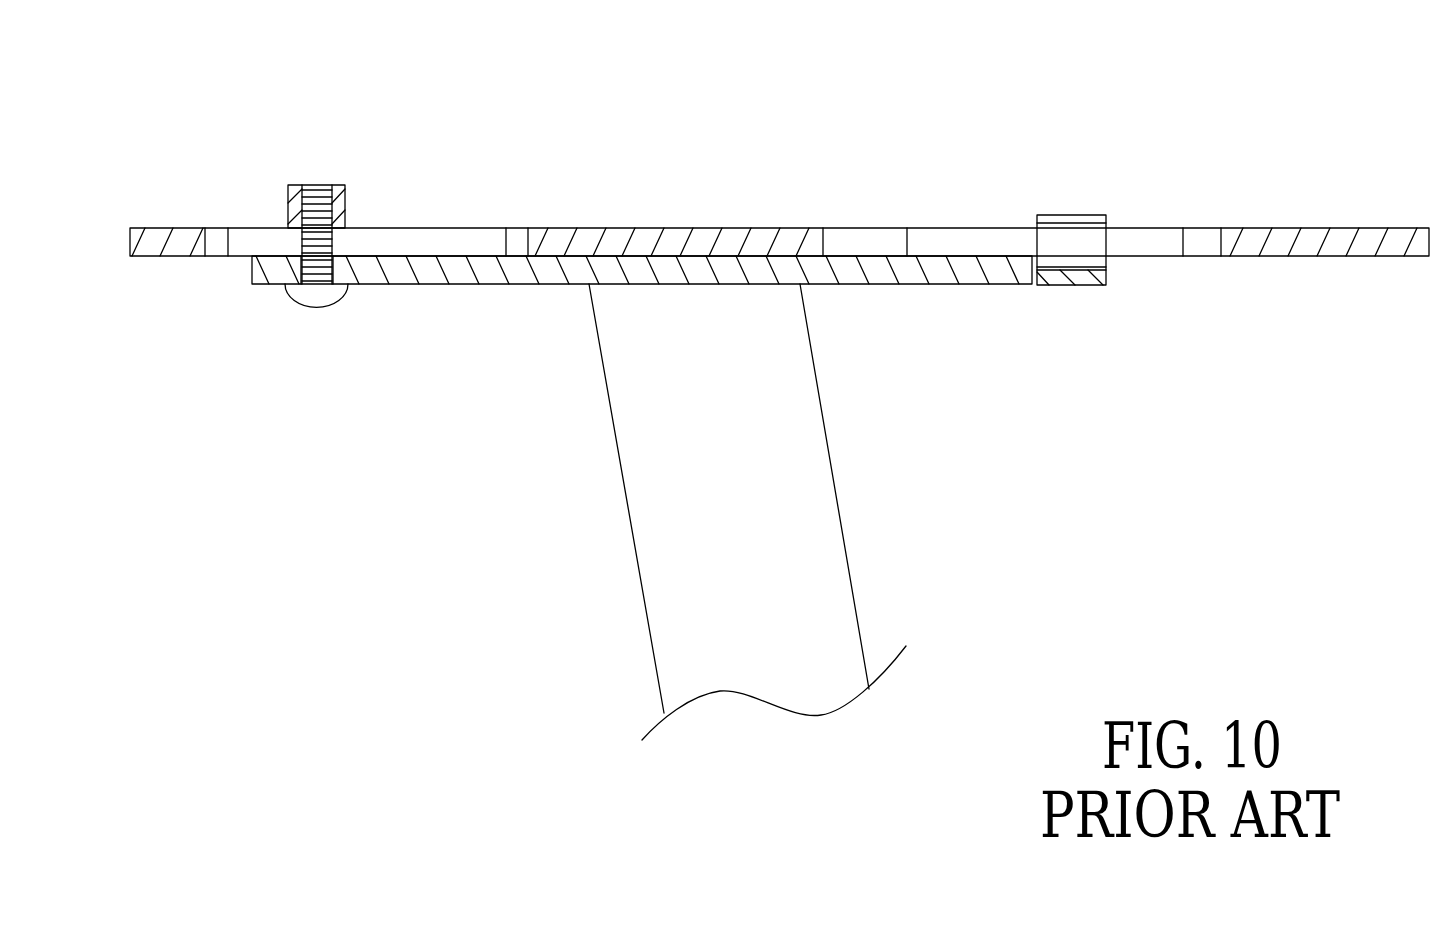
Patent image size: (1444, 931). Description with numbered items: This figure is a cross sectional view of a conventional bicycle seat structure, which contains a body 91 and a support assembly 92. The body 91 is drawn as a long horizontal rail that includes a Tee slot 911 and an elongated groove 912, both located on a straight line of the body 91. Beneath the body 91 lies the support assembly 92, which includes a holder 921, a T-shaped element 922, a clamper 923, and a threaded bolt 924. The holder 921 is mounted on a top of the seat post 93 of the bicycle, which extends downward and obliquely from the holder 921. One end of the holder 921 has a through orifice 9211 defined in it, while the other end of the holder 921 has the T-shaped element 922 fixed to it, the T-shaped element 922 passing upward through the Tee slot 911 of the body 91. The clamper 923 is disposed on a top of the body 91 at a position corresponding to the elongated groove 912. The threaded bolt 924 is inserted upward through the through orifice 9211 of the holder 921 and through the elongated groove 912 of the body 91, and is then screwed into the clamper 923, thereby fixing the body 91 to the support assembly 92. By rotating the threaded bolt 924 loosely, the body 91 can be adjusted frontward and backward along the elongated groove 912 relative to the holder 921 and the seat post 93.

The body 91 is at (677, 214).
The Tee slot 911 is at (977, 243).
The elongated groove 912 is at (413, 238).
The support assembly 92 is at (466, 300).
The holder 921 is at (885, 273).
The through orifice 9211 is at (297, 269).
The T-shaped element 922 is at (1072, 233).
The clamper 923 is at (298, 207).
The threaded bolt 924 is at (317, 297).
The seat post 93 is at (864, 559).